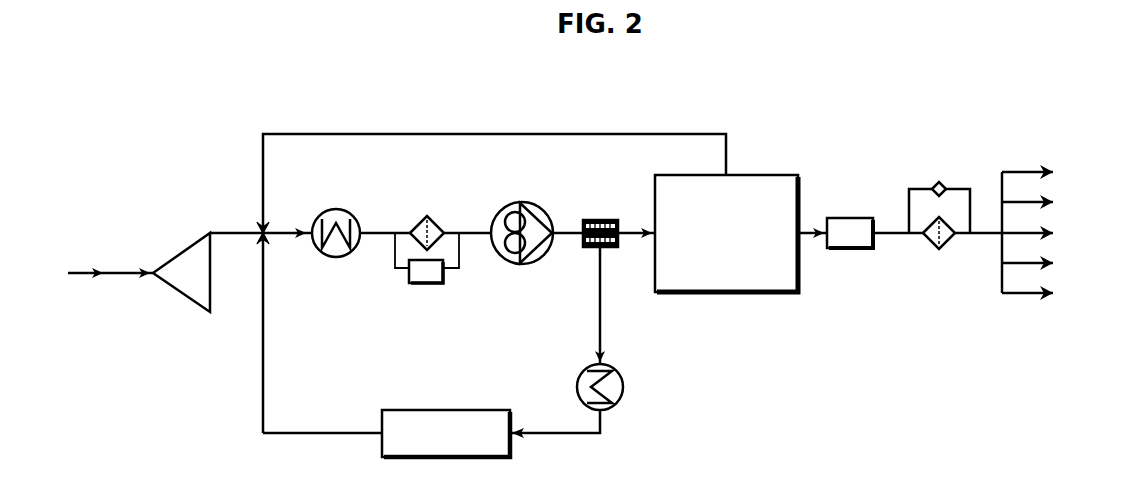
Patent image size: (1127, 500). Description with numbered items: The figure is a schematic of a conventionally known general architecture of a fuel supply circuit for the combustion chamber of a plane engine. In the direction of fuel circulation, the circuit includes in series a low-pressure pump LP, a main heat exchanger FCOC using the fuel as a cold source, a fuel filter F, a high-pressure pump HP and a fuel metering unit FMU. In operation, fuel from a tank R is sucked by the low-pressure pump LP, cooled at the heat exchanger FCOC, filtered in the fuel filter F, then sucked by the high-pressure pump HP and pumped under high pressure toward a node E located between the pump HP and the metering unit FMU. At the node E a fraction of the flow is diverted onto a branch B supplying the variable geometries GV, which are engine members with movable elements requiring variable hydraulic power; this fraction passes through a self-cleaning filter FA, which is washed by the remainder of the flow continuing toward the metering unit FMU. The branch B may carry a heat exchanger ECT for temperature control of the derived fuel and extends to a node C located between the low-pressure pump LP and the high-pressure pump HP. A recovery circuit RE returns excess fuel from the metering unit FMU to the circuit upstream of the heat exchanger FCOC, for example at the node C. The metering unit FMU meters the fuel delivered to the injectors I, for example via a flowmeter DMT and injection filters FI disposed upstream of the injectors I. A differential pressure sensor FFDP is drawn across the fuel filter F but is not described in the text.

The tank R is at (100, 273).
The low-pressure pump LP is at (181, 272).
The node C is at (262, 229).
The recovery circuit RE is at (520, 134).
The main heat exchanger FCOC is at (336, 250).
The fuel filter F is at (427, 221).
The fuel filter differential pressure sensor FFDP is at (424, 275).
The high-pressure pump HP is at (522, 247).
The self-cleaning filter FA is at (600, 221).
The node E is at (620, 241).
The branch B is at (600, 303).
The fuel metering unit FMU is at (726, 233).
The flowmeter DMT is at (850, 230).
The injection filters FI is at (939, 204).
The injectors I is at (1080, 209).
The heat exchanger ECT is at (623, 386).
The variable geometries GV is at (446, 433).